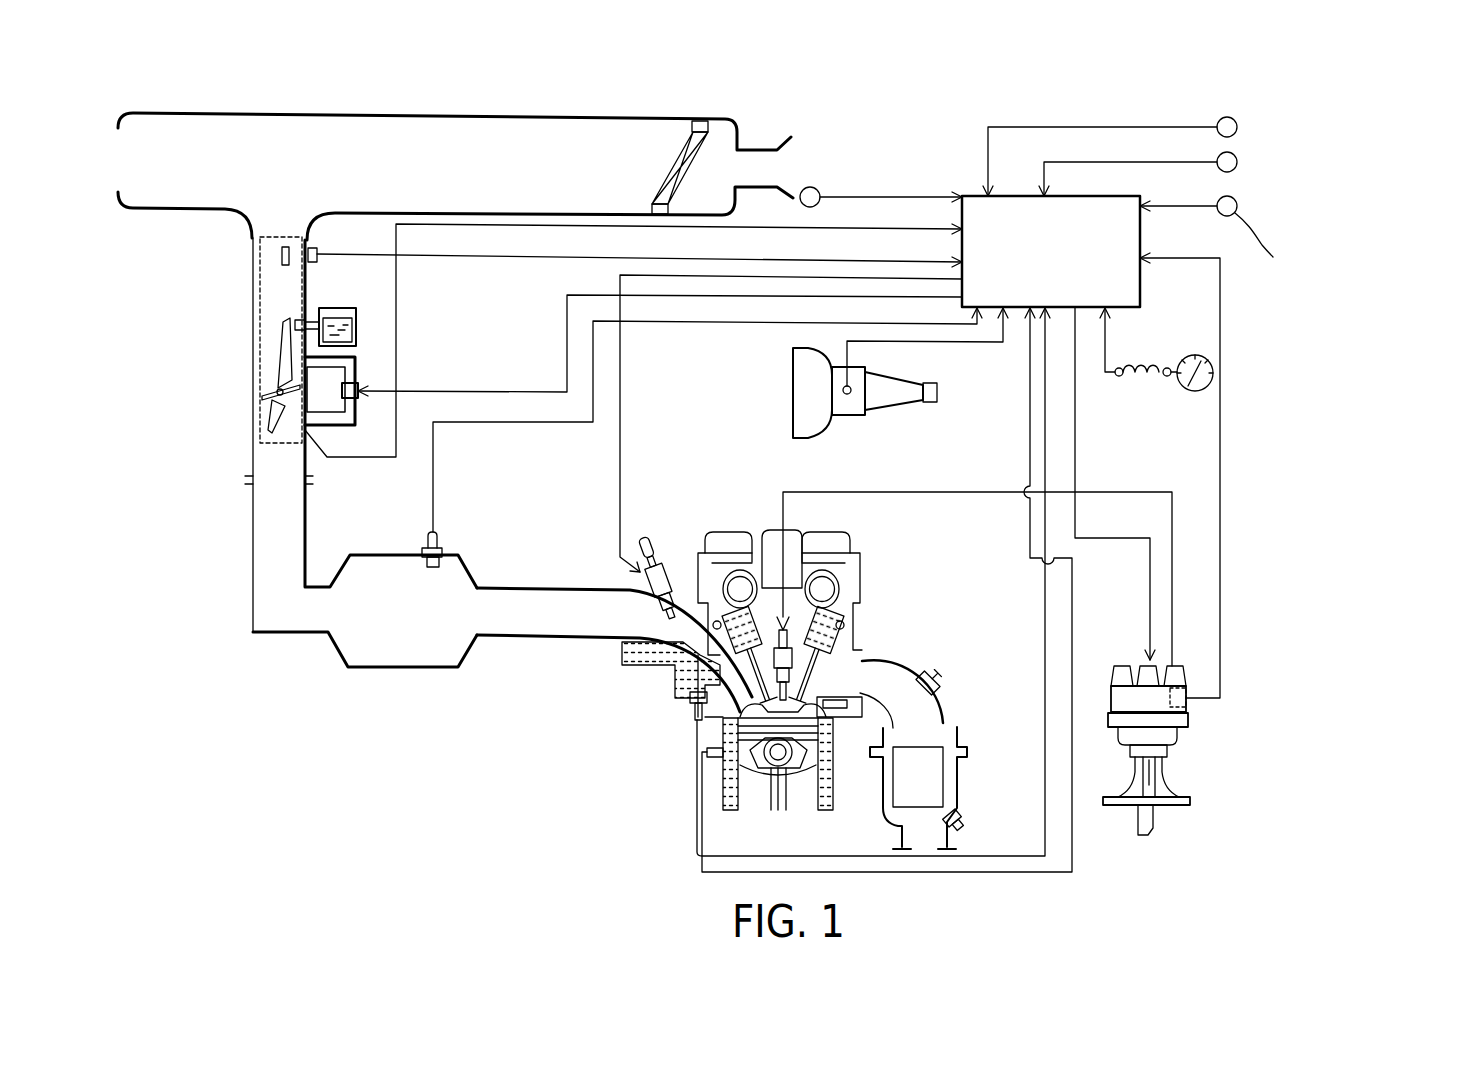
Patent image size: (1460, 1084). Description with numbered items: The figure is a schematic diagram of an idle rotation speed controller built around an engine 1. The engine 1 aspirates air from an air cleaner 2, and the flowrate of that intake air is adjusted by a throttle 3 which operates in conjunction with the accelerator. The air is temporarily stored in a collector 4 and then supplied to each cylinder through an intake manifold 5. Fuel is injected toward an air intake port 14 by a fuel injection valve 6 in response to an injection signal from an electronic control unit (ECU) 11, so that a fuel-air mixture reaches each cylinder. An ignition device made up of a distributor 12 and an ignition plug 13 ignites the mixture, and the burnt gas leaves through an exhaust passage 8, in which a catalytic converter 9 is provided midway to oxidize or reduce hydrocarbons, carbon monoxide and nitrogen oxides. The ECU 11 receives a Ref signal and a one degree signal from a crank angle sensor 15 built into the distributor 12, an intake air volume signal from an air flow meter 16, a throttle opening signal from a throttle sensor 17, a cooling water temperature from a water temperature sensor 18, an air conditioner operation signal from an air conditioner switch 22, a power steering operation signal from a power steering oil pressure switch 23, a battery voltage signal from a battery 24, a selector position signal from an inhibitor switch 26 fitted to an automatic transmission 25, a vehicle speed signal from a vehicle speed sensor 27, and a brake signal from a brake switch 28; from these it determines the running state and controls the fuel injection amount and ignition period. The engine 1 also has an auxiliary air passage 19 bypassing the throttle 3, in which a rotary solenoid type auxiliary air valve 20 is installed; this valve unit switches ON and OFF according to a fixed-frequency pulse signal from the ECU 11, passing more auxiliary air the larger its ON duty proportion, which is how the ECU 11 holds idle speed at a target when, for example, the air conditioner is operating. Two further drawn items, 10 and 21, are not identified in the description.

The engine 1 is at (605, 694).
The air cleaner 2 is at (683, 148).
The throttle 3 is at (272, 388).
The collector 4 is at (366, 655).
The intake manifold 5 is at (540, 630).
The fuel injection valve 6 is at (662, 568).
The exhaust passage 8 is at (895, 687).
The catalytic converter 9 is at (937, 748).
The throttle sensor 10 is at (950, 684).
The electronic control unit (ECU) 11 is at (1068, 265).
The distributor 12 is at (1177, 743).
The ignition plug 13 is at (843, 658).
The air intake port 14 is at (670, 679).
The crank angle sensor 15 is at (1187, 690).
The air flow meter 16 is at (286, 245).
The throttle sensor 17 is at (268, 384).
The water temperature sensor 18 is at (693, 716).
The auxiliary air passage 19 is at (336, 422).
The auxiliary air valve 20 is at (362, 387).
The intake air temperature sensor 21 is at (442, 540).
The air conditioner switch 22 is at (1236, 169).
The power steering oil pressure switch 23 is at (1345, 282).
The battery 24 is at (810, 187).
The automatic transmission 25 is at (866, 419).
The inhibitor switch 26 is at (846, 395).
The vehicle speed sensor 27 is at (1197, 392).
The brake switch 28 is at (1235, 118).